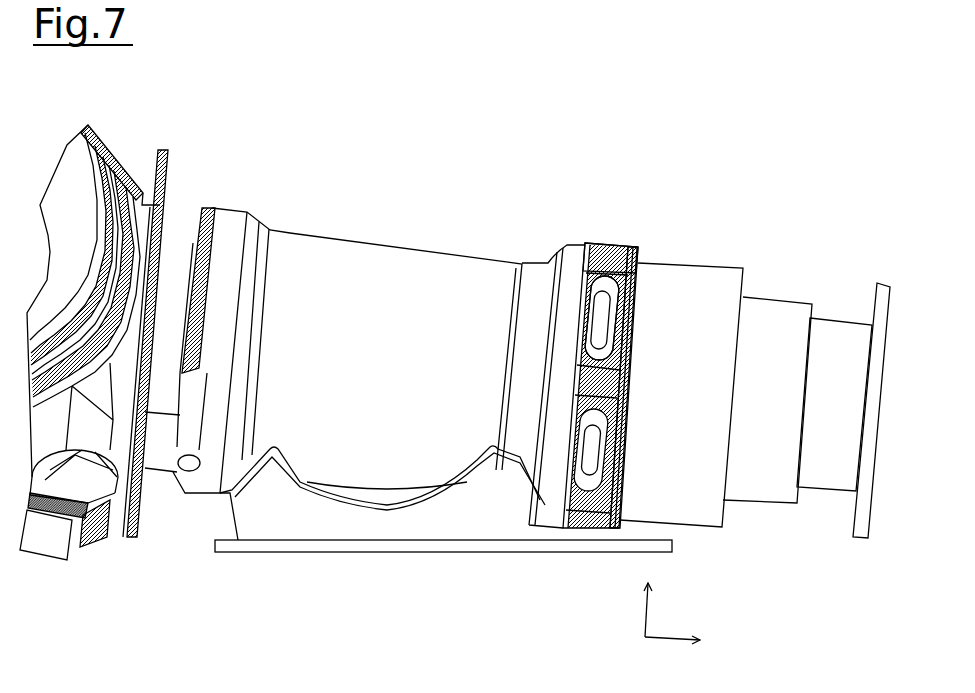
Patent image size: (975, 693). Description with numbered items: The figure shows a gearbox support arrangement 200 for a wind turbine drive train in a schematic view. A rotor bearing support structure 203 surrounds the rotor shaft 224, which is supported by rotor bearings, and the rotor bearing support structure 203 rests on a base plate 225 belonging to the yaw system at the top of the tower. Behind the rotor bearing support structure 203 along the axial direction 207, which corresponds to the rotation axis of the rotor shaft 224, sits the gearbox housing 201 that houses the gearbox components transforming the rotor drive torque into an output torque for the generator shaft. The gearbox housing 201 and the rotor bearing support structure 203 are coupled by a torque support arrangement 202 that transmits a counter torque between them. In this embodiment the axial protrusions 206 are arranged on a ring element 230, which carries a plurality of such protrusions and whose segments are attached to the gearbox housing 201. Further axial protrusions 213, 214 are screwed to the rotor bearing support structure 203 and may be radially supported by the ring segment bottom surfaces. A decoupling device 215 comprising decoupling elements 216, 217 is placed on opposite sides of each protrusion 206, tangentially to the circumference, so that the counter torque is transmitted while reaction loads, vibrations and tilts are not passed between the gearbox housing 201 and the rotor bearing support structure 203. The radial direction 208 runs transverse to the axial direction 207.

The gearbox support arrangement 200 is at (757, 87).
The gearbox housing 201 is at (697, 353).
The torque support arrangement 202 is at (614, 213).
The rotor bearing support structure 203 is at (388, 280).
The axial protrusion 206 is at (603, 387).
The axial direction 207 is at (657, 640).
The radial direction 208 is at (643, 617).
The further axial protrusion 213 is at (620, 423).
The further axial protrusion 214 is at (588, 275).
The decoupling device 215 is at (593, 370).
The decoupling element 216 is at (593, 370).
The second decoupling element 217 is at (585, 375).
The rotor shaft 224 is at (193, 243).
The base plate 225 is at (228, 552).
The ring element 230 is at (603, 389).